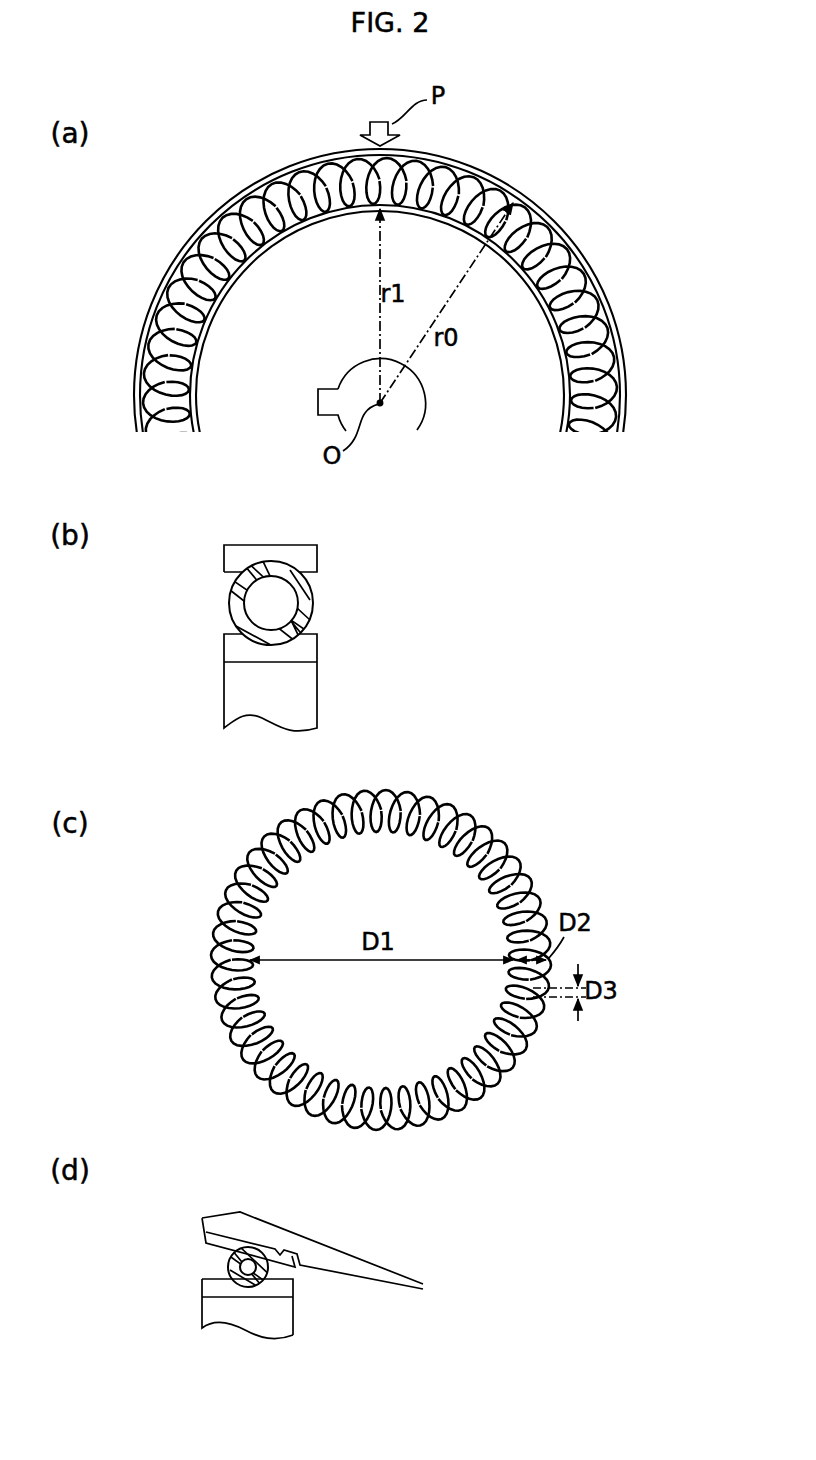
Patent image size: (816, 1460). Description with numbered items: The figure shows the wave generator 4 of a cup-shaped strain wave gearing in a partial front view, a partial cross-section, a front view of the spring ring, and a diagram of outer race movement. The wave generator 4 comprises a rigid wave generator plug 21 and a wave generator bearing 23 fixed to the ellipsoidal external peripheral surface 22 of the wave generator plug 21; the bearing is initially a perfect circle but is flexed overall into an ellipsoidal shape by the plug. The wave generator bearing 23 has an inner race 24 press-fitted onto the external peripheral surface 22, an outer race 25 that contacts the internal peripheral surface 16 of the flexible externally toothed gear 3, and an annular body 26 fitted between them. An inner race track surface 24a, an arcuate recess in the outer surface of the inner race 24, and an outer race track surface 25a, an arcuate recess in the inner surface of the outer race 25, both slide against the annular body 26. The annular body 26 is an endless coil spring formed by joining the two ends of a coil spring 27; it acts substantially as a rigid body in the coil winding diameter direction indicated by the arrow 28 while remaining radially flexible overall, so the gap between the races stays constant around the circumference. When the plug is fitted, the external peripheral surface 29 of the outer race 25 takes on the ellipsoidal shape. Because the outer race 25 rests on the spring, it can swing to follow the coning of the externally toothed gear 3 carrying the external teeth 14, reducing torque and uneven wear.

The externally toothed gear 3 is at (374, 1246).
The wave generator 4 is at (539, 172).
The external teeth 14 is at (256, 1223).
The internal peripheral surface 16 is at (280, 1252).
The wave generator plug 21 is at (514, 380).
The external peripheral surface 22 is at (563, 402).
The wave generator bearing 23 is at (712, 170).
The inner race 24 is at (562, 322).
The inner race track surface 24a is at (296, 627).
The outer race 25 is at (553, 209).
The outer race track surface 25a is at (297, 582).
The annular body 26 is at (576, 267).
The coil spring 27 is at (533, 895).
The arrow 28 is at (440, 893).
The external peripheral surface 29 is at (256, 545).